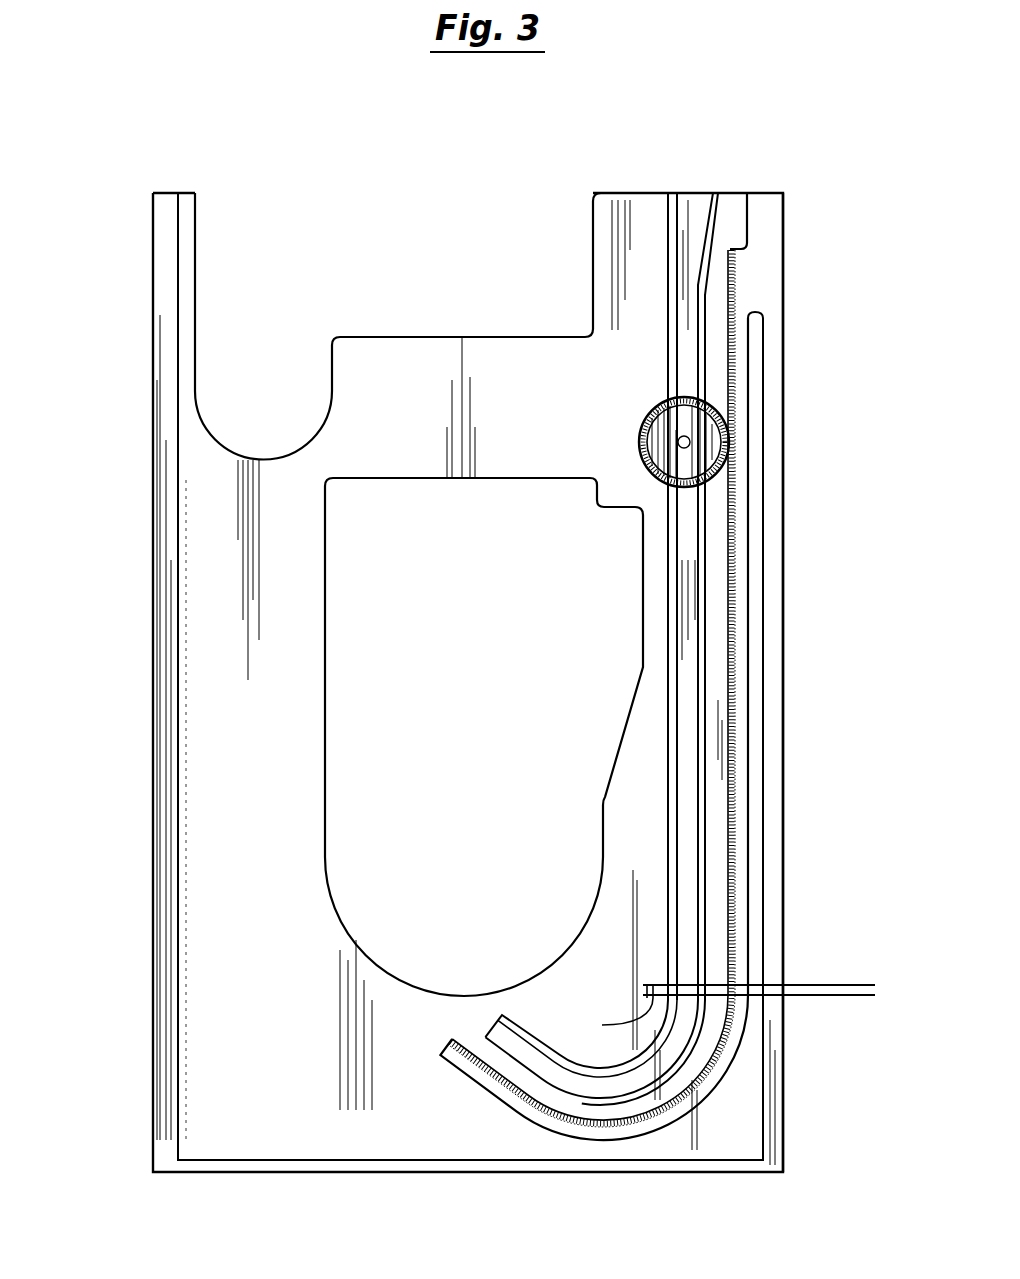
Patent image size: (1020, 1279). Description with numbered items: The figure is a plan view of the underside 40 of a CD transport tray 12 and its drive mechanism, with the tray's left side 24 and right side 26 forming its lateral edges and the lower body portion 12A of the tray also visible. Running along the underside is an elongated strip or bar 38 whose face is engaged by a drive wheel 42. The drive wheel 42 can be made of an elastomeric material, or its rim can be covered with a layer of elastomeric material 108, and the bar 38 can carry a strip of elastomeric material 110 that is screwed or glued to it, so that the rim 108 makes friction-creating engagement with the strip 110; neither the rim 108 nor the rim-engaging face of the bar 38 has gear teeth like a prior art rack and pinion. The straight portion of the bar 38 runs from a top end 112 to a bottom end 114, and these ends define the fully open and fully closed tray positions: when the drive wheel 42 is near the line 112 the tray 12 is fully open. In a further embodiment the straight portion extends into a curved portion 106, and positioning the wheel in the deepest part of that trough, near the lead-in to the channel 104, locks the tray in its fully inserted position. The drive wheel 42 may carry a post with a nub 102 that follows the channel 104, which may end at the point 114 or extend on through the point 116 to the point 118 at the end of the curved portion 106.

The tray 12 is at (450, 337).
The holder lower body 12A is at (642, 627).
The left side 24 is at (783, 792).
The right side 26 is at (153, 997).
The elongated strip 38 is at (742, 490).
The underside 40 is at (245, 855).
The drive wheel 42 is at (660, 428).
The nub 102 is at (690, 438).
The channel 104 is at (685, 683).
The curved portion 106 is at (597, 1068).
The layer of elastomeric material 108 is at (660, 427).
The elastomeric strip 110 is at (728, 715).
The top end 112 is at (755, 248).
The bottom end 114 is at (849, 985).
The point 116 is at (848, 997).
The point 118 is at (438, 1058).